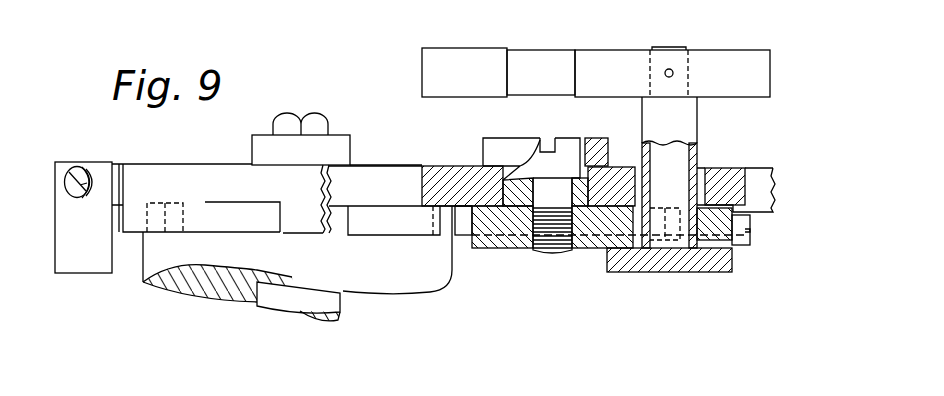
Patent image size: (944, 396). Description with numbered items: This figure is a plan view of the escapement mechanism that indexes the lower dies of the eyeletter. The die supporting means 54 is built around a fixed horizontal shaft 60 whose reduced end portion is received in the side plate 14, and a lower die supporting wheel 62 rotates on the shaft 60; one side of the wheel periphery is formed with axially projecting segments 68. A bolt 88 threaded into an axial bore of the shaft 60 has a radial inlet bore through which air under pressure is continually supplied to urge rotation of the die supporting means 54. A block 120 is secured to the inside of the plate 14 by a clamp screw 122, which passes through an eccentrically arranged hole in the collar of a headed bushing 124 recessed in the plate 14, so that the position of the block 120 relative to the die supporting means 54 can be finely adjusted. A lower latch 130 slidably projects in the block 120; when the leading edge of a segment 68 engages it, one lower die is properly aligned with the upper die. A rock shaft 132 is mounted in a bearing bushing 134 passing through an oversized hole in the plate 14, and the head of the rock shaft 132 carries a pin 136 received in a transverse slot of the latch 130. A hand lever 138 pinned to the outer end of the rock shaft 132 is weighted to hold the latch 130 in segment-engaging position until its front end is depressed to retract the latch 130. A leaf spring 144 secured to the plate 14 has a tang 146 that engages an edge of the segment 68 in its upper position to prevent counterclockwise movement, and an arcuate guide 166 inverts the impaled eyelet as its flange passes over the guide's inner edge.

The side plate 14 is at (395, 168).
The die supporting means 54 is at (382, 317).
The fixed horizontal shaft 60 is at (262, 310).
The lower die supporting wheel 62 is at (197, 293).
The axially projecting segments 68 is at (168, 202).
The bolt 88 is at (325, 123).
The block 120 is at (508, 249).
The clamp screw 122 is at (560, 150).
The headed bushing 124 is at (483, 157).
The lower latch 130 is at (462, 237).
The rock shaft 132 is at (650, 273).
The bearing bushing 134 is at (698, 128).
The pin 136 is at (672, 245).
The hand lever 138 is at (538, 49).
The leaf spring 144 is at (146, 168).
The tang 146 is at (271, 208).
The arcuate guide 166 is at (87, 266).